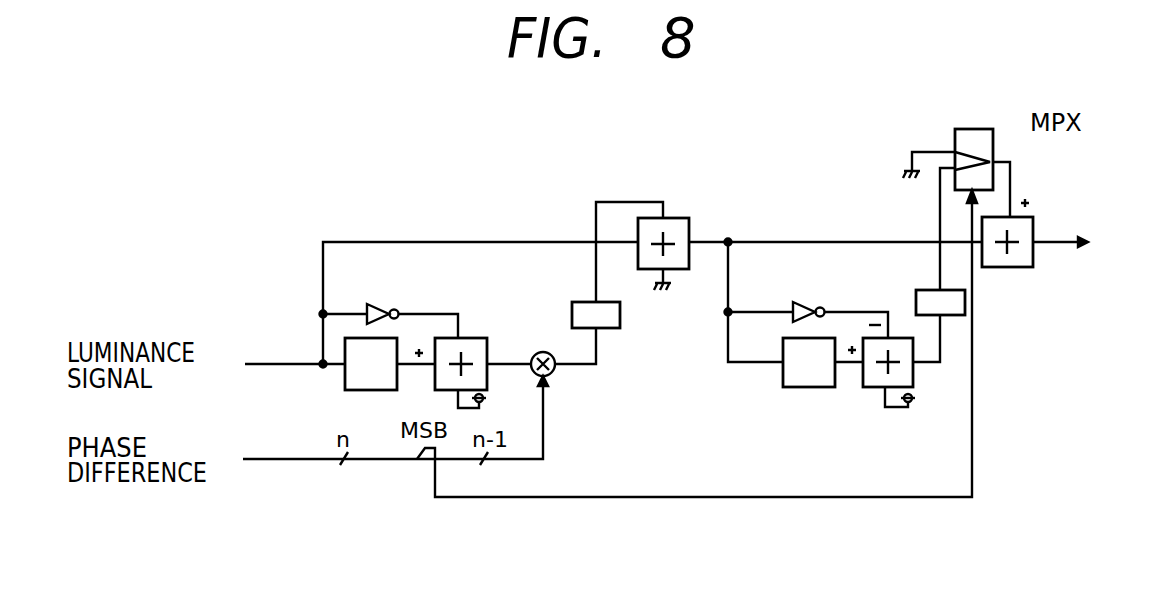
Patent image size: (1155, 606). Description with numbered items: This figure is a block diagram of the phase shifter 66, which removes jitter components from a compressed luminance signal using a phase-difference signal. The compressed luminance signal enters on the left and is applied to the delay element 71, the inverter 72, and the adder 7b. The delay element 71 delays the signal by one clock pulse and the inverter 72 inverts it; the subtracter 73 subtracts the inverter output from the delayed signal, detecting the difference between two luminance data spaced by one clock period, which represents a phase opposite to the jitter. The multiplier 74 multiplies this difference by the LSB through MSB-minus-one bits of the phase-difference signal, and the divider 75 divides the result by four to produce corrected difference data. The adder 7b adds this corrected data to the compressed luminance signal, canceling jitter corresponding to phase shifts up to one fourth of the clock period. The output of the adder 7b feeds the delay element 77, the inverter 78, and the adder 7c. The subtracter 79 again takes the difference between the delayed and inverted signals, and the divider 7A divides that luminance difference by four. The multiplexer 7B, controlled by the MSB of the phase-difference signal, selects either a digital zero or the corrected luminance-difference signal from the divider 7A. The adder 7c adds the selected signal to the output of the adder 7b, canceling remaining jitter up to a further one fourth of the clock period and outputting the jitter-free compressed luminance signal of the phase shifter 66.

The phase shifter 66 is at (553, 207).
The delay element 71 is at (398, 340).
The inverter 72 is at (379, 304).
The subtracter 73 is at (463, 338).
The multiplier 74 is at (543, 352).
The divider 75 is at (620, 315).
The adder 7b is at (685, 218).
The delay element 77 is at (797, 387).
The inverter 78 is at (801, 303).
The subtracter 79 is at (875, 387).
The divider 7A is at (925, 290).
The multiplexer 7B is at (993, 148).
The adder 7c is at (1033, 217).